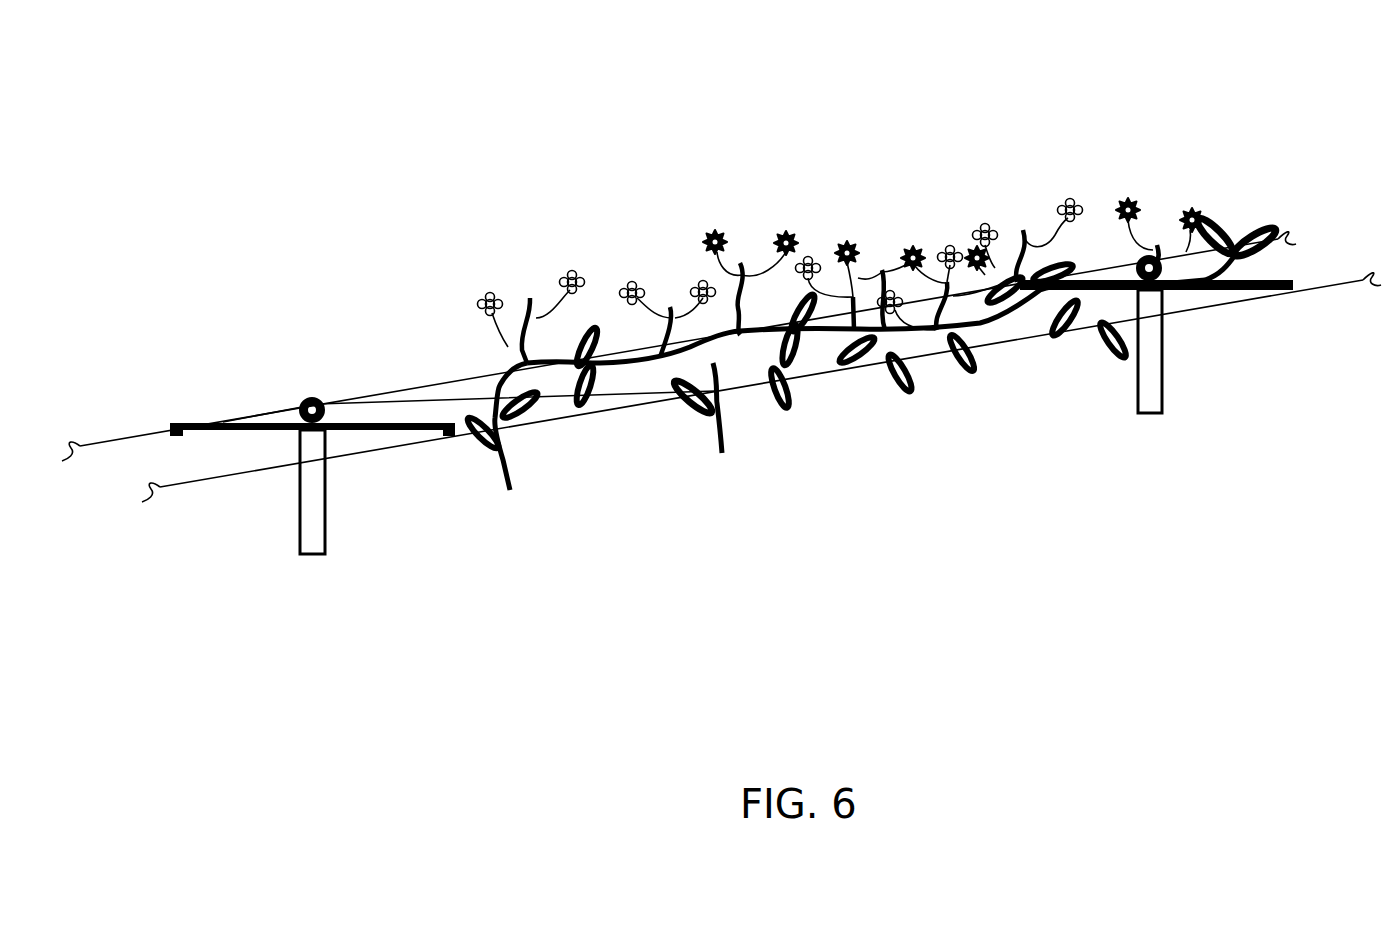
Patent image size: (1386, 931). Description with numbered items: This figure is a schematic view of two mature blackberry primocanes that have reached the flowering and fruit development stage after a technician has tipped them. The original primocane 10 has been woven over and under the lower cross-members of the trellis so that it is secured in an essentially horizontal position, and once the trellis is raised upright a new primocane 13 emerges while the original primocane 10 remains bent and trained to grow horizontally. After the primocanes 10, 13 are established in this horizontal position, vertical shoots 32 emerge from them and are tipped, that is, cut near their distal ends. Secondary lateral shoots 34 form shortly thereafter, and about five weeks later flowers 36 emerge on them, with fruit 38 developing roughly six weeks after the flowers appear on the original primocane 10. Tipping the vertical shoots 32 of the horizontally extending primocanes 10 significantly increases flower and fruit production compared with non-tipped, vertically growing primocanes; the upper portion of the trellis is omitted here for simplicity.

The primocane 10 is at (503, 460).
The new primocane 13 is at (717, 412).
The vertical shoot 32 is at (520, 338).
The secondary lateral shoot 34 is at (723, 273).
The flower 36 is at (847, 245).
The fruit cluster 38 is at (1062, 200).